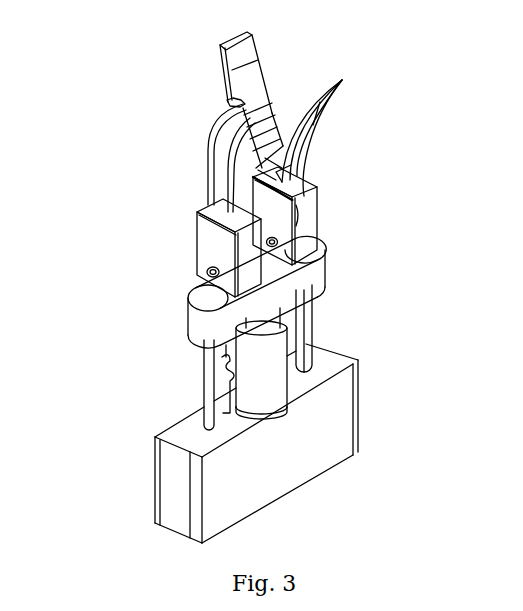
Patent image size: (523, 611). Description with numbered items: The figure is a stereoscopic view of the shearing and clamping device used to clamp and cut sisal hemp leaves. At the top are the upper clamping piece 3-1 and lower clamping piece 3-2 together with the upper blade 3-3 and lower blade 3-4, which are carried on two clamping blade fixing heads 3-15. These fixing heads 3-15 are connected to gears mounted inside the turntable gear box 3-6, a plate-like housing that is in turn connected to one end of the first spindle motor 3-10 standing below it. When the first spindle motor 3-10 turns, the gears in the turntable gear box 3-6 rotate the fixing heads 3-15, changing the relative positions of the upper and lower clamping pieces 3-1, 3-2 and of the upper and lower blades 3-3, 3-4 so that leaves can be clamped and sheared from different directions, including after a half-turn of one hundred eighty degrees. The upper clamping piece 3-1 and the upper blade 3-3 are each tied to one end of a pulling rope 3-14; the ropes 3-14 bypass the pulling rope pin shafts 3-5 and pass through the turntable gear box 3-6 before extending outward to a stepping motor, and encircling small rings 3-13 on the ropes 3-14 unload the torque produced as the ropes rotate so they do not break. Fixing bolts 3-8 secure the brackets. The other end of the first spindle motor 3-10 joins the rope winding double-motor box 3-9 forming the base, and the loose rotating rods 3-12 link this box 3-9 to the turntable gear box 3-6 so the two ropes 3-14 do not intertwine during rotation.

The upper clamping piece 3-1 is at (306, 132).
The lower clamping piece 3-2 is at (258, 69).
The upper blade 3-3 is at (224, 186).
The lower blade 3-4 is at (219, 105).
The pulling rope pin shaft 3-5 is at (318, 197).
The turntable gear box 3-6 is at (202, 320).
The fixing bolt 3-8 is at (205, 274).
The rope winding double-motor box 3-9 is at (170, 498).
The first spindle motor 3-10 is at (281, 365).
The loose rotating rod 3-12 is at (204, 382).
The encircling small ring 3-13 is at (301, 331).
The pulling rope 3-14 is at (310, 220).
The clamping blade fixing head 3-15 is at (200, 247).